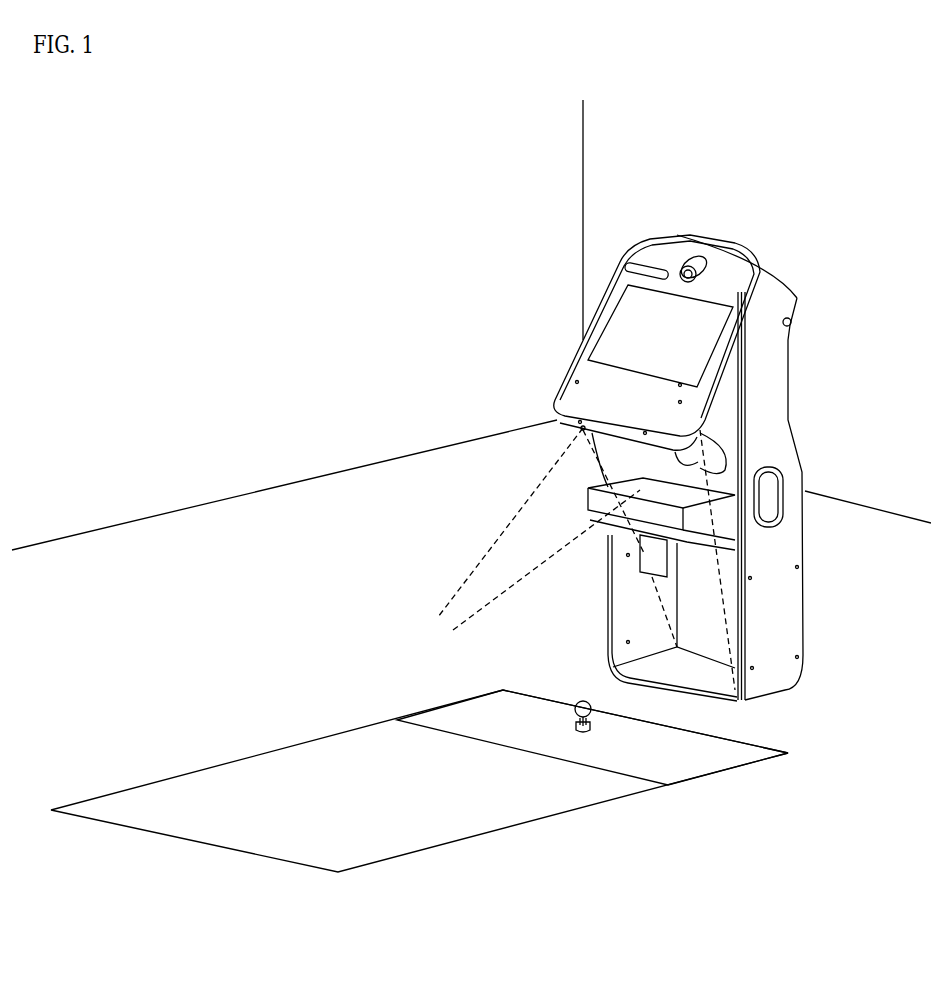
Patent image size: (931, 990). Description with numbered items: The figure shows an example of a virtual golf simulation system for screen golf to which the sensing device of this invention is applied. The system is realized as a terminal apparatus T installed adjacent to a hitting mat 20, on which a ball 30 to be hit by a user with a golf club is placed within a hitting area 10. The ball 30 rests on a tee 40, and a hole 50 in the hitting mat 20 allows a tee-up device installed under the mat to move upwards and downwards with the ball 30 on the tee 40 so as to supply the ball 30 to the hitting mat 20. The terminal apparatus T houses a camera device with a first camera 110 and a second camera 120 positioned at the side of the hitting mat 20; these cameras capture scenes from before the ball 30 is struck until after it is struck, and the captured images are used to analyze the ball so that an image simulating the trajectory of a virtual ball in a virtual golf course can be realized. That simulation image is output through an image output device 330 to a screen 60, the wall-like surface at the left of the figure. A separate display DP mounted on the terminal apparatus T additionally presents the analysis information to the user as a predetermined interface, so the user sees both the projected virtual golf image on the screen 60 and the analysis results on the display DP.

The hitting area 10 is at (360, 798).
The hitting mat 20 is at (463, 715).
The ball 30 is at (591, 706).
The tee 40 is at (573, 718).
The hole 50 is at (593, 727).
The screen 60 is at (138, 280).
The terminal apparatus T is at (619, 361).
The display DP is at (600, 318).
The first camera 110 is at (735, 471).
The second camera 120 is at (578, 438).
The image output device 330 is at (587, 494).